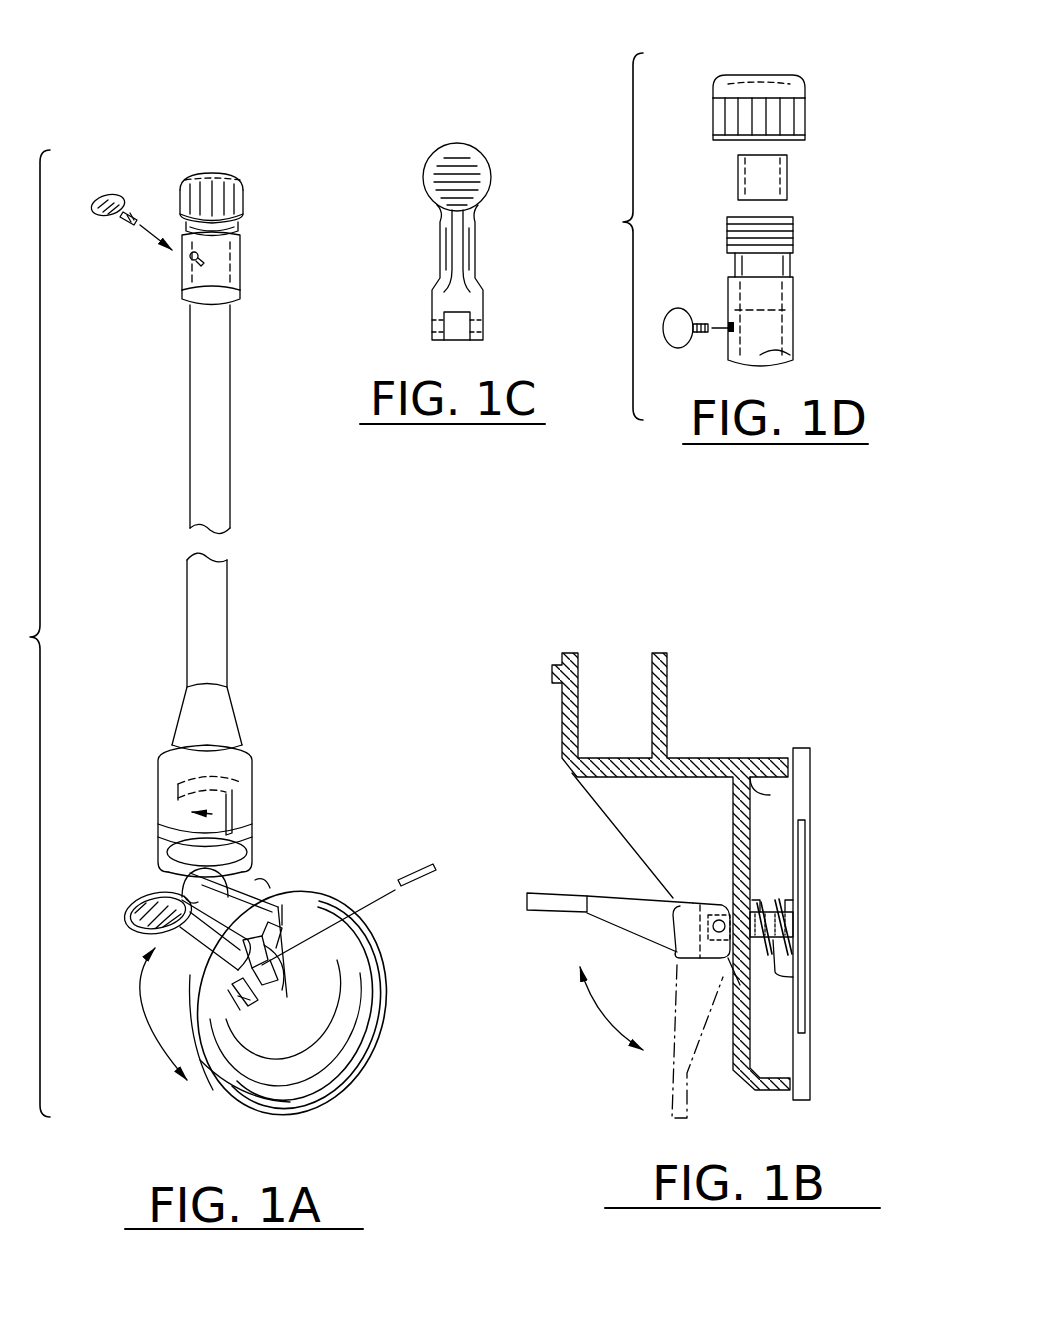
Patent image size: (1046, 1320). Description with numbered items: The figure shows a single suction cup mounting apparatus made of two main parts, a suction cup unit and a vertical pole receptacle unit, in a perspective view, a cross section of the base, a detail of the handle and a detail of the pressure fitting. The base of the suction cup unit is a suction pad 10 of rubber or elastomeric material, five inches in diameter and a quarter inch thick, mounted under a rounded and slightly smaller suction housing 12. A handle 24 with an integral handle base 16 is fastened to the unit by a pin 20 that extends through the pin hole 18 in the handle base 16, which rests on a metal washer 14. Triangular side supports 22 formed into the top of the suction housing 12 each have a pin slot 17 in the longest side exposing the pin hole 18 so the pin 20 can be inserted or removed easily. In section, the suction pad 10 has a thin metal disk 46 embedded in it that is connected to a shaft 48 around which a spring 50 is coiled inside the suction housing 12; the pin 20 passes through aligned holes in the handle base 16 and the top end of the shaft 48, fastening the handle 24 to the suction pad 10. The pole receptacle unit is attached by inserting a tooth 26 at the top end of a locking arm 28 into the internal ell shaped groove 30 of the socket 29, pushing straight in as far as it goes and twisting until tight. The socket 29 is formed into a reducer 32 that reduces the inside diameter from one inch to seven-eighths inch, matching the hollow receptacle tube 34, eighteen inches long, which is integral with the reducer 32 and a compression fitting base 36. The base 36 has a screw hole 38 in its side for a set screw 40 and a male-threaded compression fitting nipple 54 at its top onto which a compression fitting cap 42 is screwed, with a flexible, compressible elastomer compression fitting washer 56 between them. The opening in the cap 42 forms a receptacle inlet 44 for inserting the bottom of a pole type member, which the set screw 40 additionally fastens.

In FIG. 1A, the suction pad 10 is at (330, 1060).
In FIG. 1B, the suction pad 10 is at (805, 748).
In FIG. 1A, the suction housing 12 is at (230, 1090).
In FIG. 1B, the suction housing 12 is at (720, 760).
In FIG. 1A, the metal washer 14 is at (335, 1056).
In FIG. 1B, the metal washer 14 is at (728, 960).
In FIG. 1A, the handle base 16 is at (225, 1000).
In FIG. 1C, the handle base 16 is at (483, 296).
In FIG. 1B, the handle base 16 is at (684, 958).
In FIG. 1A, the pin slot 17 is at (270, 956).
In FIG. 1B, the pin slot 17 is at (680, 905).
In FIG. 1A, the pin hole 18 is at (250, 1000).
In FIG. 1C, the pin hole 18 is at (483, 328).
In FIG. 1A, the pin 20 is at (400, 884).
In FIG. 1B, the pin 20 is at (712, 918).
In FIG. 1A, the side support 22 is at (308, 900).
In FIG. 1B, the side support 22 is at (620, 808).
In FIG. 1A, the handle 24 is at (128, 940).
In FIG. 1C, the handle 24 is at (484, 124).
In FIG. 1B, the handle 24 is at (558, 912).
In FIG. 1B, the tooth 26 is at (562, 670).
In FIG. 1A, the locking arm 28 is at (182, 885).
In FIG. 1B, the locking arm 28 is at (667, 672).
In FIG. 1A, the socket 29 is at (158, 785).
In FIG. 1A, the ell shaped groove 30 is at (232, 786).
In FIG. 1A, the reducer 32 is at (180, 722).
In FIG. 1A, the hollow receptacle tube 34 is at (190, 420).
In FIG. 1A, the compression fitting base 36 is at (182, 290).
In FIG. 1D, the compression fitting base 36 is at (793, 328).
In FIG. 1A, the screw hole 38 is at (190, 258).
In FIG. 1D, the screw hole 38 is at (728, 332).
In FIG. 1A, the set screw 40 is at (110, 192).
In FIG. 1D, the set screw 40 is at (686, 310).
In FIG. 1A, the compression fitting cap 42 is at (180, 190).
In FIG. 1D, the compression fitting cap 42 is at (805, 122).
In FIG. 1A, the receptacle inlet 44 is at (225, 172).
In FIG. 1D, the receptacle inlet 44 is at (782, 80).
In FIG. 1B, the thin metal disk 46 is at (805, 848).
In FIG. 1B, the shaft 48 is at (800, 968).
In FIG. 1B, the spring 50 is at (775, 908).
In FIG. 1A, the compression fitting nipple 54 is at (238, 229).
In FIG. 1D, the compression fitting nipple 54 is at (793, 240).
In FIG. 1D, the compression fitting washer 56 is at (787, 180).